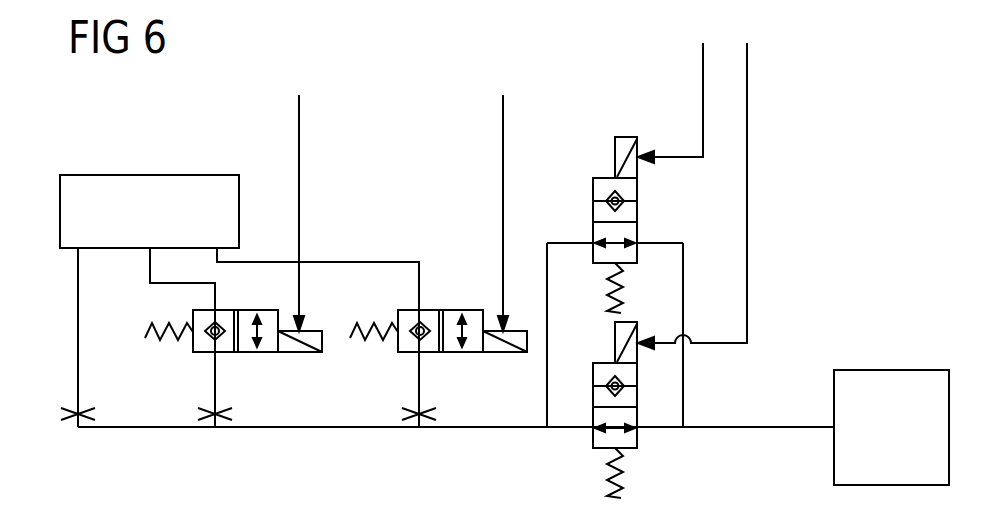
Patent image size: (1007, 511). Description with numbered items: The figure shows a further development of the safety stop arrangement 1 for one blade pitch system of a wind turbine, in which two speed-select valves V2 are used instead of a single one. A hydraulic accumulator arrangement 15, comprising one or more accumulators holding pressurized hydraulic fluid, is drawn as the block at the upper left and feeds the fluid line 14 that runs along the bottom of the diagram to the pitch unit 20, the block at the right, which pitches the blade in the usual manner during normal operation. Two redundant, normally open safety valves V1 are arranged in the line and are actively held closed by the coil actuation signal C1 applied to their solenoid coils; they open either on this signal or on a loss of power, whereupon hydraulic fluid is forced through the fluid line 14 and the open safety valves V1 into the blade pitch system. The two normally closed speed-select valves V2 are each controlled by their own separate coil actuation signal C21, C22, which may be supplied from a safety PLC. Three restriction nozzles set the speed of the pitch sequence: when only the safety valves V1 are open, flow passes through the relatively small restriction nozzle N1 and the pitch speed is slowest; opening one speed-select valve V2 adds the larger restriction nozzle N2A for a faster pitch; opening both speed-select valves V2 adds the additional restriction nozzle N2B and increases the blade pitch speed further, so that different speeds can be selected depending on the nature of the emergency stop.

The safety stop arrangement 1 is at (882, 83).
The fluid line 14 is at (327, 430).
The hydraulic accumulator arrangement 15 is at (147, 175).
The pitch unit 20 is at (892, 370).
The coil actuation signal C1 is at (703, 78).
The coil actuation signal C21 is at (299, 118).
The coil actuation signal C22 is at (503, 118).
The safety valve V1 is at (593, 190).
The speed-select valve V2 is at (268, 353).
The restriction nozzle N1 is at (70, 422).
The restriction nozzle N2A is at (207, 422).
The restriction nozzle N2B is at (412, 422).